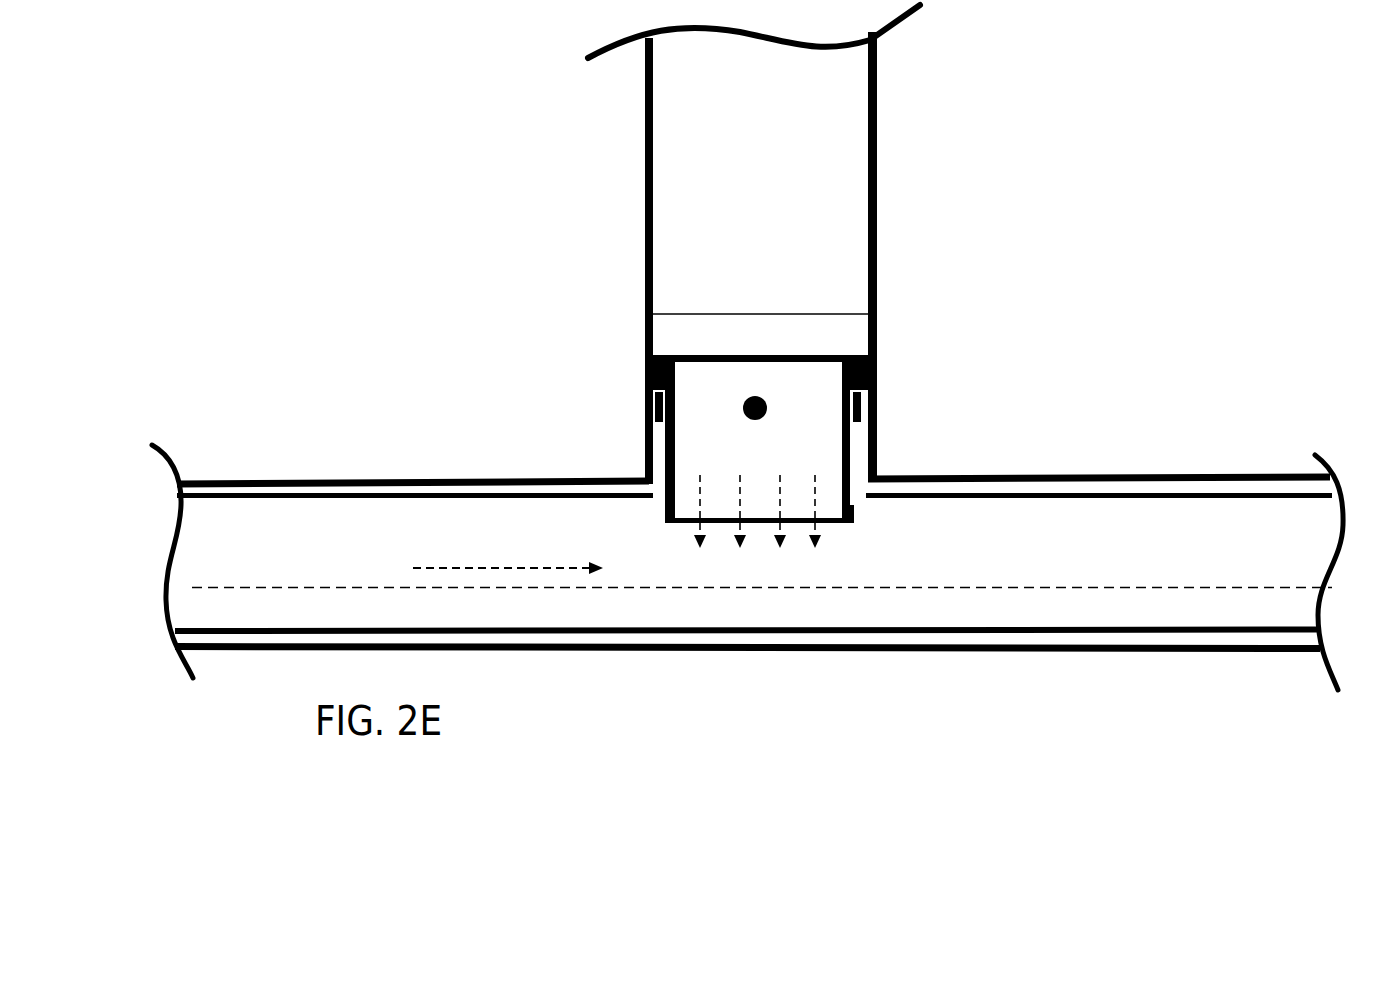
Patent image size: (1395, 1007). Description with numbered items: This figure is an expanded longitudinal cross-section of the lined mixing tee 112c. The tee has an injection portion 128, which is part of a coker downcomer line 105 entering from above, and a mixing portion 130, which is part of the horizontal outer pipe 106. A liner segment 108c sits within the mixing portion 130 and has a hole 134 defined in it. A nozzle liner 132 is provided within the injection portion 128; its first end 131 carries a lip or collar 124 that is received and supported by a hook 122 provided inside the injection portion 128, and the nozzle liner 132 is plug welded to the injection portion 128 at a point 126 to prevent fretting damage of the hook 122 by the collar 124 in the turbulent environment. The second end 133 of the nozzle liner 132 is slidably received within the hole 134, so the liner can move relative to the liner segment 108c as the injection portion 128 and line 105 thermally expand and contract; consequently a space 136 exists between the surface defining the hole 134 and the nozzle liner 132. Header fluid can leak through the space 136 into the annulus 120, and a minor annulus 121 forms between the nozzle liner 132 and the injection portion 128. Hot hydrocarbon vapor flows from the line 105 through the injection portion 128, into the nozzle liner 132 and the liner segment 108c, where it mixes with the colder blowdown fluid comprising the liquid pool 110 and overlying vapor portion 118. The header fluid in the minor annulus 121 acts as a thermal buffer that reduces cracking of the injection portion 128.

The coker downcomer line 105 is at (788, 105).
The lined mixing tee 112c is at (392, 182).
The outer pipe 106 is at (265, 473).
The liner segment 108c is at (1137, 500).
The liquid pool 110 is at (303, 572).
The vapor portion 118 is at (240, 612).
The annulus 120 is at (1030, 488).
The minor annulus 121 is at (655, 457).
The hook 122 is at (861, 406).
The collar 124 is at (873, 363).
The plug weld point 126 is at (747, 398).
The injection portion 128 is at (850, 328).
The mixing portion 130 is at (623, 610).
The first end 131 is at (760, 353).
The nozzle liner 132 is at (717, 462).
The second end 133 is at (667, 517).
The hole 134 is at (868, 493).
The space 136 is at (866, 506).